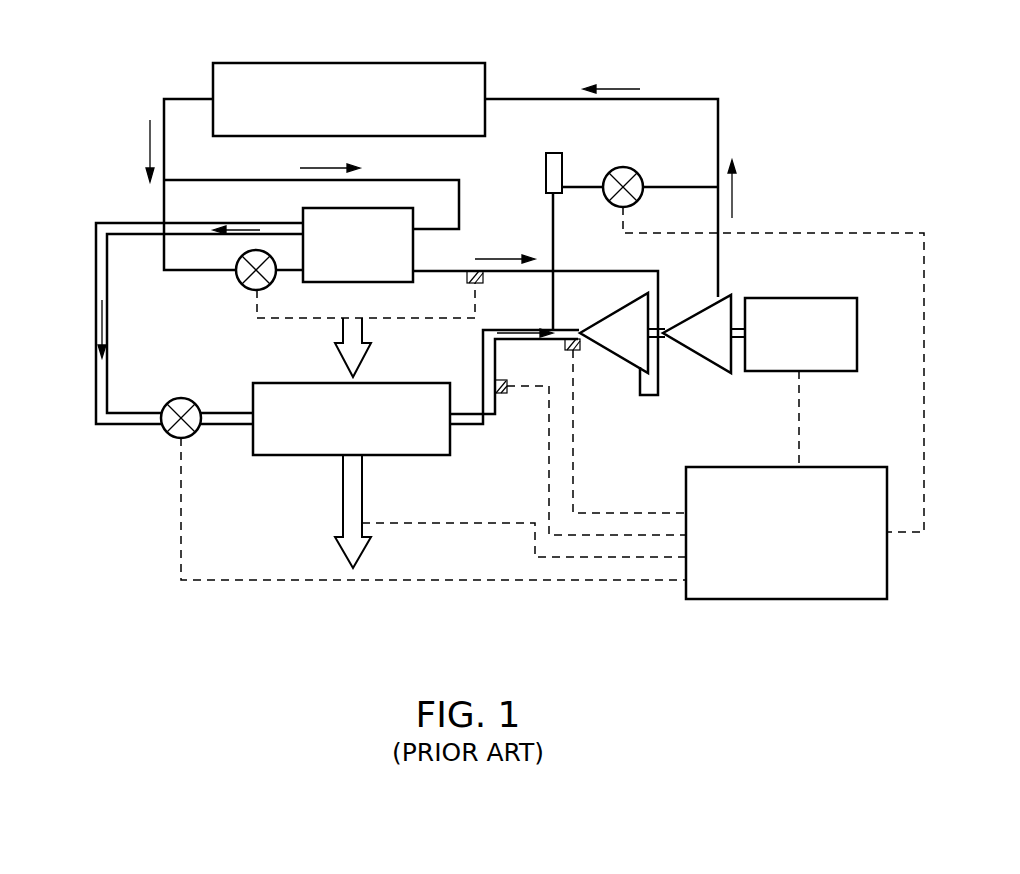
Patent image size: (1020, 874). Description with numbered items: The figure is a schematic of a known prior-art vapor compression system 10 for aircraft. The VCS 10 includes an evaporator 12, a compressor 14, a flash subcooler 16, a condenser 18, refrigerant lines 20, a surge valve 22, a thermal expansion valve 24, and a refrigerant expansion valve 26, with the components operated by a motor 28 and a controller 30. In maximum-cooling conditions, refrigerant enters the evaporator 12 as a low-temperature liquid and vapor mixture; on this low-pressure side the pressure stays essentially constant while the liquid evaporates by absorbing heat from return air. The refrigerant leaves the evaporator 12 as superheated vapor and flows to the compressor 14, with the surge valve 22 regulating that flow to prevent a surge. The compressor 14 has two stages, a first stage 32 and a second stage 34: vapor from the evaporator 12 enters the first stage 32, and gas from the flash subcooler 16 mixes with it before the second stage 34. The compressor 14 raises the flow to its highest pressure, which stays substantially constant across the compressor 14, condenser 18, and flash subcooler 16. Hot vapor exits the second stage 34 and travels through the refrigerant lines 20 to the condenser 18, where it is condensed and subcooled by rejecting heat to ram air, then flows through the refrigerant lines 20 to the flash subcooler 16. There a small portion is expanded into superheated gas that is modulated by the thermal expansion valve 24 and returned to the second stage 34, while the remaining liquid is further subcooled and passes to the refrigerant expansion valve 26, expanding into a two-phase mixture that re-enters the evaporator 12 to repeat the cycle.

The vapor compression system 10 is at (849, 55).
The evaporator 12 is at (351, 419).
The compressor 14 is at (657, 375).
The flash subcooler 16 is at (358, 245).
The condenser 18 is at (349, 99).
The refrigerant lines 20 is at (525, 99).
The surge valve 22 is at (645, 134).
The thermal expansion valve 24 is at (209, 301).
The refrigerant expansion valve 26 is at (130, 450).
The motor 28 is at (794, 334).
The controller 30 is at (786, 533).
The first stage 32 is at (614, 333).
The second stage 34 is at (697, 334).